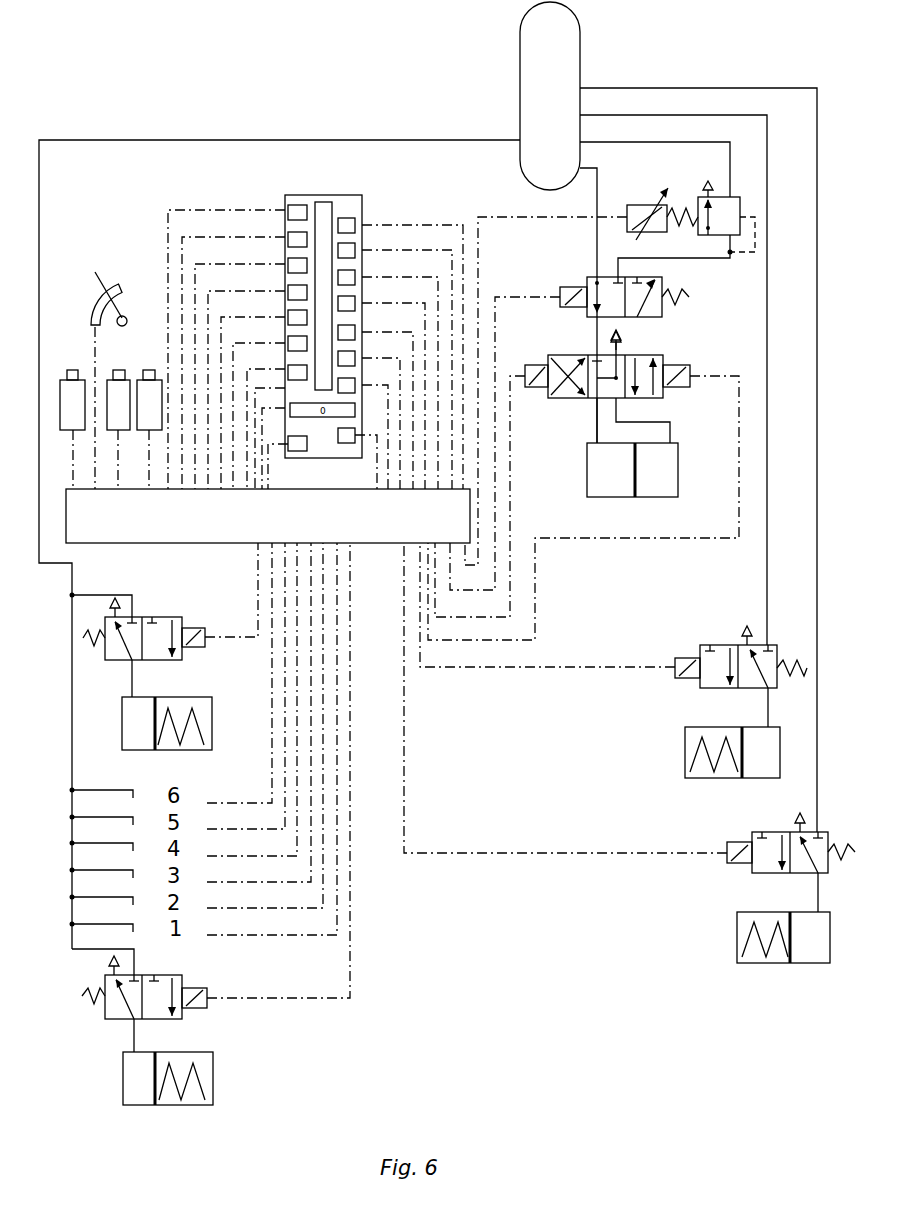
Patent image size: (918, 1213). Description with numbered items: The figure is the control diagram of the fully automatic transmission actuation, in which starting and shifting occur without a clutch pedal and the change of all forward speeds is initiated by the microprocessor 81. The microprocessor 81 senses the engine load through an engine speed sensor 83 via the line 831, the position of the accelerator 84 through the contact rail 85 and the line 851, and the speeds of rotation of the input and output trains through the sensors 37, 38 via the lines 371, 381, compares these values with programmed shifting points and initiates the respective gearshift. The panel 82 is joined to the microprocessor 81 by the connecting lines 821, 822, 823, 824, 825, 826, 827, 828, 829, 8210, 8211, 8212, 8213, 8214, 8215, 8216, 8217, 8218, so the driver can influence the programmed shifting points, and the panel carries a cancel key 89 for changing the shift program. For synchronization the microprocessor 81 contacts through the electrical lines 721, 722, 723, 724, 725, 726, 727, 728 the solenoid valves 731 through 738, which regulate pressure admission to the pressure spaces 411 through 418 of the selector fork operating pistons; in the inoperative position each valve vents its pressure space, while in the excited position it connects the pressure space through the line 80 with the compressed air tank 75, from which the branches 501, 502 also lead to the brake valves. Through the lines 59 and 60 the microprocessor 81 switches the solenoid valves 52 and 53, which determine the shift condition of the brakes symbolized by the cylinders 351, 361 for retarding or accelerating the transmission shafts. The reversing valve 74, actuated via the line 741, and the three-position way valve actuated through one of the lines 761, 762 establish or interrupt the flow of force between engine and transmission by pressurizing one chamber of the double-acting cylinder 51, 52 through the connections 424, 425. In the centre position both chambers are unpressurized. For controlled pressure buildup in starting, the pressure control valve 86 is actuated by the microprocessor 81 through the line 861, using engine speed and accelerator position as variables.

The compressed air tank 75 is at (580, 42).
The line 80 is at (304, 139).
The microprocessor 81 is at (312, 490).
The panel 82 is at (318, 186).
The cancel key 89 is at (326, 208).
The connecting line 821 is at (272, 444).
The connecting line 822 is at (268, 401).
The connecting line 823 is at (256, 388).
The connecting line 824 is at (248, 369).
The connecting line 825 is at (238, 343).
The connecting line 826 is at (232, 317).
The connecting line 827 is at (244, 291).
The connecting line 828 is at (244, 264).
The connecting line 829 is at (244, 237).
The connecting line 8210 is at (240, 210).
The connecting line 8211 is at (376, 225).
The connecting line 8212 is at (375, 250).
The connecting line 8213 is at (368, 277).
The connecting line 8214 is at (366, 303).
The connecting line 8215 is at (366, 332).
The connecting line 8216 is at (366, 358).
The connecting line 8217 is at (364, 385).
The connecting line 8218 is at (374, 428).
The accelerator 84 is at (99, 272).
The contact rail 85 is at (92, 301).
The line 851 is at (92, 363).
The engine speed sensor 83 is at (66, 371).
The line 831 is at (73, 443).
The sensor 38 is at (112, 372).
The line 381 is at (118, 435).
The sensor 37 is at (142, 372).
The line 371 is at (148, 463).
The supply line 501 is at (658, 115).
The supply line 502 is at (743, 88).
The pressure control valve 86 is at (736, 198).
The line 861 is at (498, 217).
The reversing valve 74 is at (655, 318).
The line 741 is at (498, 297).
The pressure line 424 is at (597, 421).
The pressure line 425 is at (670, 432).
The pneumatic cylinder chamber 51 is at (618, 497).
The solenoid valve 52 is at (682, 657).
The line 761 is at (510, 520).
The line 762 is at (676, 543).
The solenoid valve 731 is at (187, 627).
The solenoid valve 738 is at (193, 987).
The electrical line 721 is at (232, 636).
The electrical line 722 is at (214, 803).
The electrical line 723 is at (240, 829).
The electrical line 724 is at (246, 856).
The electrical line 725 is at (248, 882).
The electrical line 726 is at (260, 900).
The electrical line 727 is at (250, 935).
The electrical line 728 is at (280, 998).
The pressure space 411 is at (127, 735).
The pressure space 418 is at (131, 1098).
The solenoid valve 53 is at (733, 842).
The cylinder 351 is at (771, 752).
The cylinder 361 is at (818, 942).
The line 59 is at (607, 669).
The line 60 is at (594, 845).